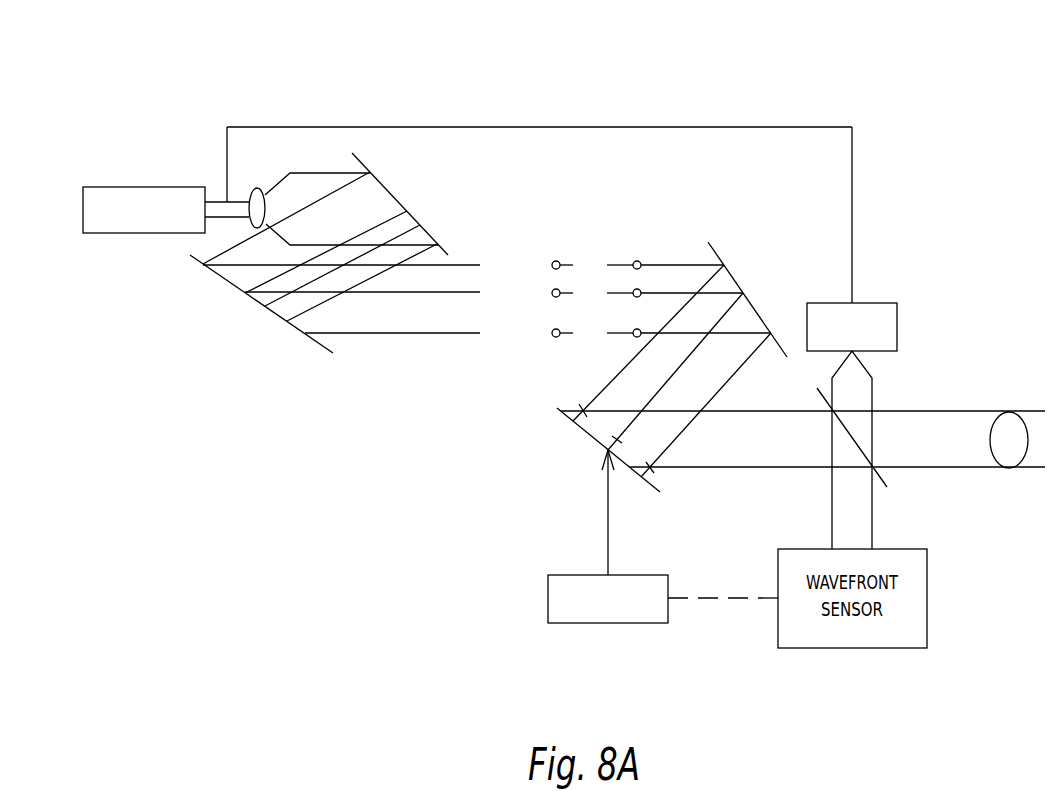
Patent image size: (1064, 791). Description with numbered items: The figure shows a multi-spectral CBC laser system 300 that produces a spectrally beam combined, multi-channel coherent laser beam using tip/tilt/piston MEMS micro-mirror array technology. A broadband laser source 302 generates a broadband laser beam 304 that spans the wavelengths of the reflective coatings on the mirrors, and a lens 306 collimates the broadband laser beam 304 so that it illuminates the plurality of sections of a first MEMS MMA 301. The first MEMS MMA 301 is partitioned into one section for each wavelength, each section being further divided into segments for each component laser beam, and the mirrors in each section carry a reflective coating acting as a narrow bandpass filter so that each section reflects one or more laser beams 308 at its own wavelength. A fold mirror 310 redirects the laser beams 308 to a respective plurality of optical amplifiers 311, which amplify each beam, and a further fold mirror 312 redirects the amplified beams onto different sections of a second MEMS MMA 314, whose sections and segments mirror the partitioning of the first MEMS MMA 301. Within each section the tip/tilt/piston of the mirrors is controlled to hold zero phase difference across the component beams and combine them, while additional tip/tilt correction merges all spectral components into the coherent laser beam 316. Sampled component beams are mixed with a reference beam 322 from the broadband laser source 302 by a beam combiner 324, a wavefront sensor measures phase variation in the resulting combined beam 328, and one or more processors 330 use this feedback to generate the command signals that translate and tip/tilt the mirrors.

The multi-spectral CBC laser system 300 is at (970, 70).
The first MEMS MMA 301 is at (381, 180).
The broadband laser source 302 is at (144, 187).
The broadband laser beam 304 is at (305, 173).
The lens 306 is at (257, 187).
The laser beams 308 is at (223, 253).
The fold mirror 310 is at (330, 353).
The optical amplifiers 311 is at (596, 224).
The fold mirror 312 is at (727, 266).
The second MEMS MMA 314 is at (560, 417).
The spectrally beam combined, multi-channel coherent laser beam 316 is at (1010, 469).
The reference beam 322 is at (898, 318).
The beam combiner 324 is at (887, 487).
The combined beam 328 is at (832, 521).
The processors 330 is at (610, 623).